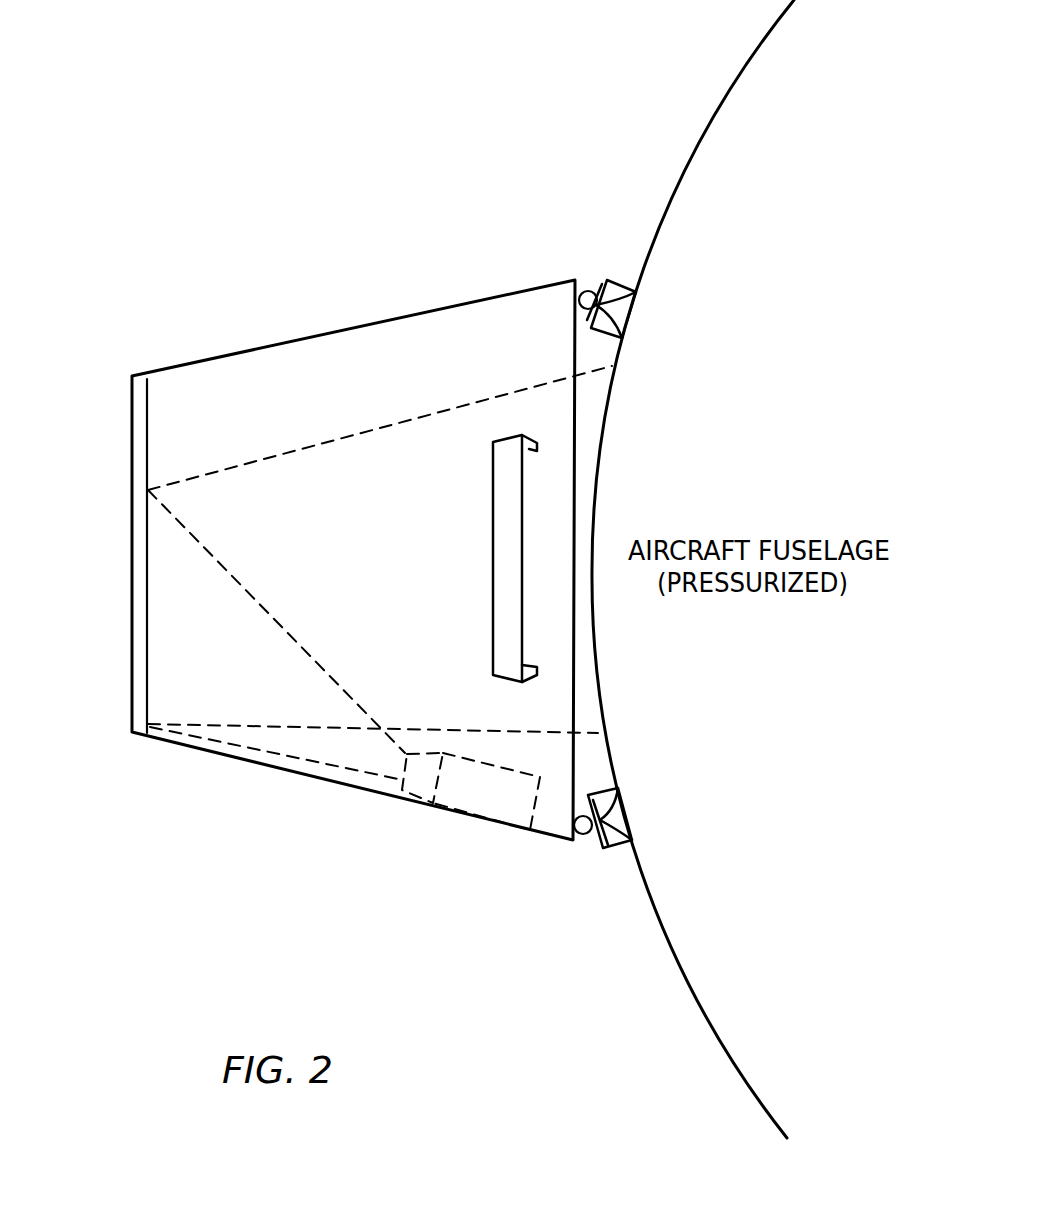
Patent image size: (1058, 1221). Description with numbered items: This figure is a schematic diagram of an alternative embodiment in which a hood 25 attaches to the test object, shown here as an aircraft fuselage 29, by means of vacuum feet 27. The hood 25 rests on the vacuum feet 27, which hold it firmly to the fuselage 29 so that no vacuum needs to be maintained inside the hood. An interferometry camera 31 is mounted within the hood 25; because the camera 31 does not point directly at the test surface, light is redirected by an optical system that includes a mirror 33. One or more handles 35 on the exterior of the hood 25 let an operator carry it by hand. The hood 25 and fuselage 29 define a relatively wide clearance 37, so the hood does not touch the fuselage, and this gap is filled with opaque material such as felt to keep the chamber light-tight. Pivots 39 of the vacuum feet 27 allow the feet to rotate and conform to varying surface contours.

The hood 25 is at (322, 332).
The vacuum feet 27 is at (625, 310).
The aircraft fuselage 29 is at (606, 722).
The interferometry camera 31 is at (460, 797).
The mirror 33 is at (138, 478).
The handles 35 is at (495, 553).
The clearance 37 is at (592, 447).
The pivots 39 is at (587, 292).